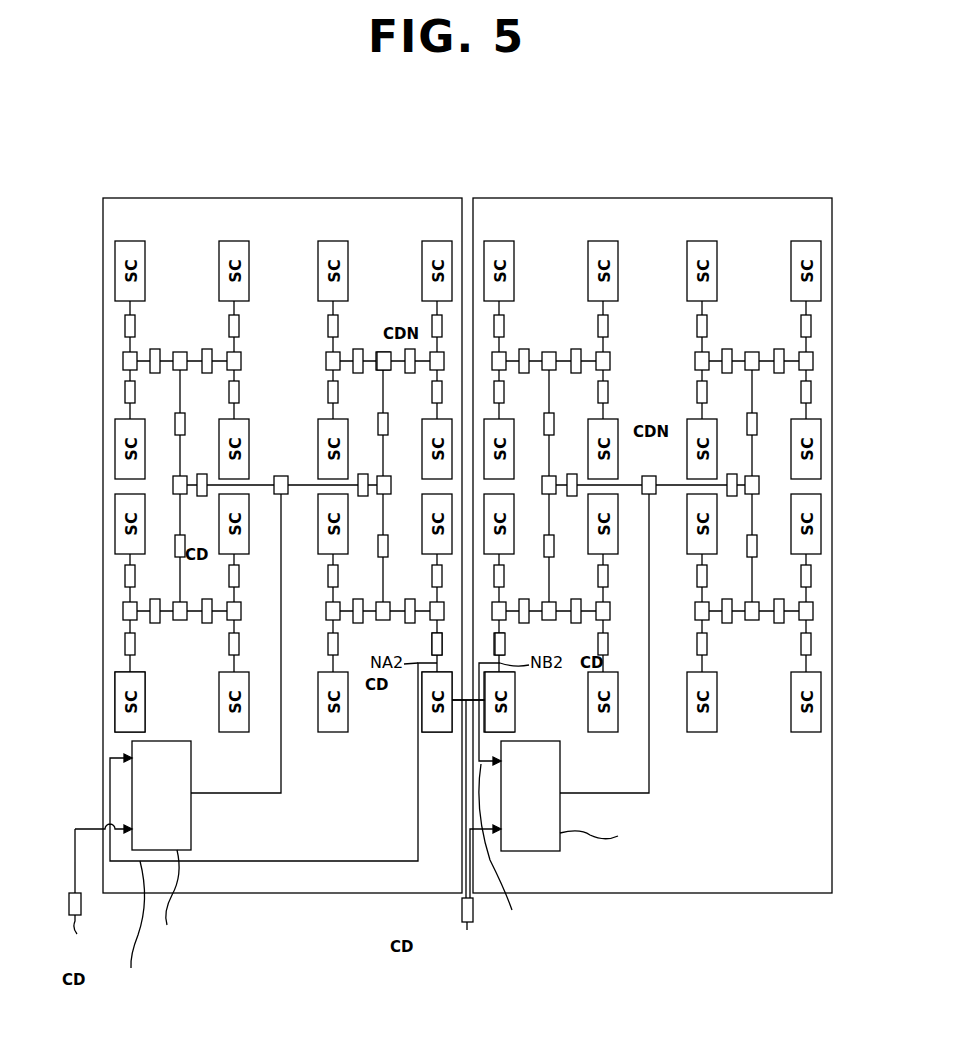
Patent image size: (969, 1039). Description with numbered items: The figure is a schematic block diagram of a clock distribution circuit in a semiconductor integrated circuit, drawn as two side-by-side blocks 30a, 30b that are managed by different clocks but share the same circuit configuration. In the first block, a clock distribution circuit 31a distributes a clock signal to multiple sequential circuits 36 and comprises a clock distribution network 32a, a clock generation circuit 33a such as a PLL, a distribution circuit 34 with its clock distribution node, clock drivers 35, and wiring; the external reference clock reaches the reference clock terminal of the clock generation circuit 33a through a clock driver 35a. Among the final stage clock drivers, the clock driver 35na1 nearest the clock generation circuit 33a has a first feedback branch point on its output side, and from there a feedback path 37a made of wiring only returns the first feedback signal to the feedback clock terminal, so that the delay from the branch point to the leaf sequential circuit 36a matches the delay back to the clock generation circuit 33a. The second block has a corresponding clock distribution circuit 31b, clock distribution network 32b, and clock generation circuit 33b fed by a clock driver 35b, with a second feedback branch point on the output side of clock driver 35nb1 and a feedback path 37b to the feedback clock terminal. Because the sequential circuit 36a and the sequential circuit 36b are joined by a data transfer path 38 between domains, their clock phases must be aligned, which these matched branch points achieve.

The block 30a is at (110, 198).
The block 30b is at (720, 198).
The clock distribution circuit 31a is at (240, 225).
The clock distribution circuit 31b is at (650, 235).
The clock distribution network 32a is at (228, 793).
The clock distribution network 32b is at (600, 793).
The clock generation circuit 33a is at (176, 894).
The clock generation circuit 33b is at (609, 833).
The distribution circuit 34 is at (649, 476).
The clock driver 35 is at (573, 512).
The clock driver 35a is at (75, 927).
The clock driver 35b is at (462, 907).
The clock driver 35na1 is at (432, 645).
The clock driver 35nb1 is at (506, 645).
The sequential circuit 36 is at (145, 697).
The sequential circuit 36a is at (422, 722).
The sequential circuit 36b is at (515, 708).
The feedback path 37a is at (143, 924).
The feedback path 37b is at (506, 850).
The data transfer path 38 is at (466, 705).